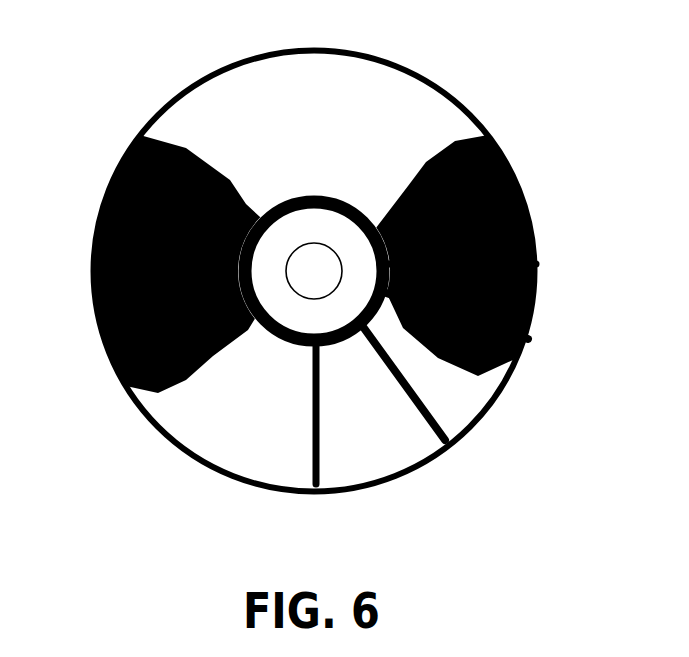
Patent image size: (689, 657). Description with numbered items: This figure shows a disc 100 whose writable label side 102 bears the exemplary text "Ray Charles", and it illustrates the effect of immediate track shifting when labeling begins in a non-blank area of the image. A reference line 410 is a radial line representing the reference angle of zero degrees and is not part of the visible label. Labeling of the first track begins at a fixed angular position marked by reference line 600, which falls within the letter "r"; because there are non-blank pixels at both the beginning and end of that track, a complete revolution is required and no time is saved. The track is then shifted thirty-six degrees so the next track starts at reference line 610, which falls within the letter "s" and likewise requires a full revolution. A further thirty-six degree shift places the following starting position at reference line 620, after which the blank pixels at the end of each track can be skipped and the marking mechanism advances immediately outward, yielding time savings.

The disc 100 is at (118, 85).
The writable label side 102 is at (250, 68).
The reference line 410 is at (522, 252).
The reference line 600 is at (308, 480).
The reference line 610 is at (438, 438).
The reference line 620 is at (524, 326).